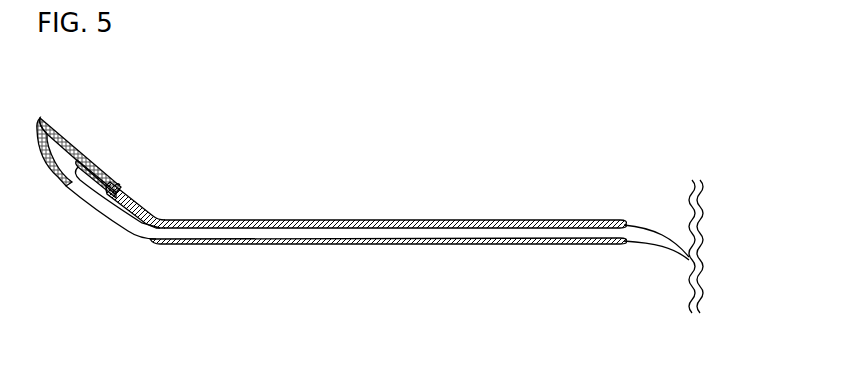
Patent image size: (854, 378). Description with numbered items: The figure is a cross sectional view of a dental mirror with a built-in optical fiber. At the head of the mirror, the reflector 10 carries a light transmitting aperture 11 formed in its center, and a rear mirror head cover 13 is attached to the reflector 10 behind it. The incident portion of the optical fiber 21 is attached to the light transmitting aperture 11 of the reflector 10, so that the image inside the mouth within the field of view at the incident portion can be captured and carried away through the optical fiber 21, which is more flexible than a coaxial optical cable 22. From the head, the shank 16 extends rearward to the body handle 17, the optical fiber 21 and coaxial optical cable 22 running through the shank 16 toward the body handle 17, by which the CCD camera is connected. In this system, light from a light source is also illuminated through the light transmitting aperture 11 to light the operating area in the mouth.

The reflector 10 is at (124, 125).
The light transmitting aperture 11 is at (147, 154).
The rear mirror head cover 13 is at (96, 219).
The shank 16 is at (194, 183).
The body handle 17 is at (395, 187).
The optical fiber 21 is at (388, 285).
The coaxial optical cable 22 is at (630, 262).